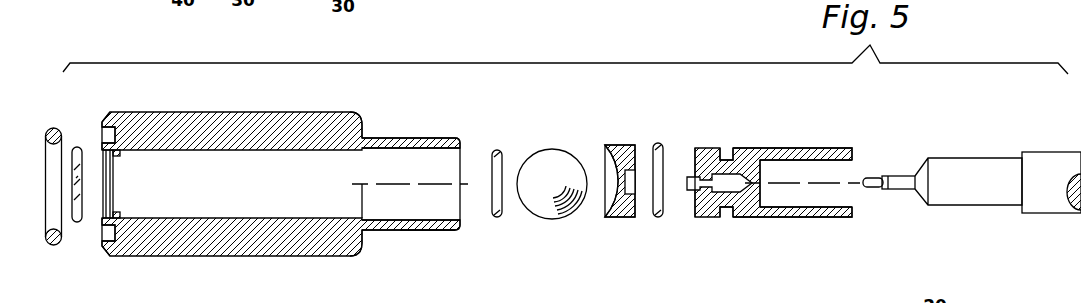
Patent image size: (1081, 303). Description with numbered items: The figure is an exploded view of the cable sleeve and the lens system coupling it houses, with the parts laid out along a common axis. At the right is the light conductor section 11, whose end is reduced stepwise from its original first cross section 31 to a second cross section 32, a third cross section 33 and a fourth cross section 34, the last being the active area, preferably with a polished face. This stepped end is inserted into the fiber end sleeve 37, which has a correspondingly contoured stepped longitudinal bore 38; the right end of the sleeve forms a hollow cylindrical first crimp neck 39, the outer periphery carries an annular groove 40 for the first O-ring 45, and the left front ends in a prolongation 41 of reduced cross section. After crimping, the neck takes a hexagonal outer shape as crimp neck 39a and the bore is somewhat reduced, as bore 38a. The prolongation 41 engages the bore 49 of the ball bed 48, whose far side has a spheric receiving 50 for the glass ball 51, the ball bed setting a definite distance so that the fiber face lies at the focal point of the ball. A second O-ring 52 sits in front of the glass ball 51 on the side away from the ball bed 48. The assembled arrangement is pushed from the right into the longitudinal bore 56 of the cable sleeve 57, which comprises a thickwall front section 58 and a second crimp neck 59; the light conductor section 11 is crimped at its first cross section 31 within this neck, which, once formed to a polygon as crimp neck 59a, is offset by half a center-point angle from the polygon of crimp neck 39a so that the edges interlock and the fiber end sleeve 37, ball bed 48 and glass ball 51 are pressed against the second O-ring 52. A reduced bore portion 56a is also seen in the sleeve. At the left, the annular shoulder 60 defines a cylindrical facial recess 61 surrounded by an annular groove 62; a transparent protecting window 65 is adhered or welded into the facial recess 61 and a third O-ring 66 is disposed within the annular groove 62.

The light conductor section 11 is at (1055, 146).
The first cross section 31 is at (1030, 160).
The second cross section 32 is at (963, 172).
The third cross section 33 is at (902, 176).
The fourth cross section 34 is at (872, 176).
The fiber end sleeve 37 is at (766, 173).
The stepped longitudinal bore 38 is at (780, 162).
The longitudinal bore after crimping 38a is at (798, 206).
The first crimp neck 39 is at (822, 155).
The crimped first crimp neck 39a is at (825, 207).
The annular groove 40 is at (732, 157).
The prolongation 41 is at (692, 163).
The first O-ring 45 is at (658, 213).
The ball bed 48 is at (617, 191).
The bore 49 is at (635, 188).
The spheric receiving 50 is at (607, 203).
The glass ball 51 is at (550, 163).
The second O-ring 52 is at (497, 152).
The longitudinal bore 56 is at (275, 184).
The cylinder bore 56a is at (407, 216).
The cable sleeve 57 is at (305, 111).
The thickwall front section 58 is at (347, 125).
The second crimp neck 59 is at (410, 138).
The crimped second crimp neck 59a is at (444, 229).
The annular shoulder 60 is at (115, 157).
The facial recess 61 is at (100, 215).
The annular groove 62 is at (102, 123).
The transparent protecting window 65 is at (77, 146).
The third O-ring 66 is at (53, 244).